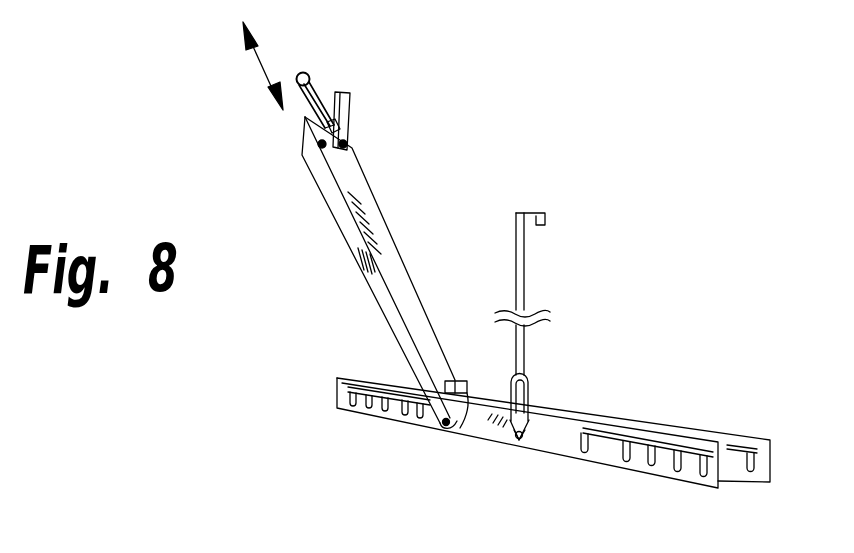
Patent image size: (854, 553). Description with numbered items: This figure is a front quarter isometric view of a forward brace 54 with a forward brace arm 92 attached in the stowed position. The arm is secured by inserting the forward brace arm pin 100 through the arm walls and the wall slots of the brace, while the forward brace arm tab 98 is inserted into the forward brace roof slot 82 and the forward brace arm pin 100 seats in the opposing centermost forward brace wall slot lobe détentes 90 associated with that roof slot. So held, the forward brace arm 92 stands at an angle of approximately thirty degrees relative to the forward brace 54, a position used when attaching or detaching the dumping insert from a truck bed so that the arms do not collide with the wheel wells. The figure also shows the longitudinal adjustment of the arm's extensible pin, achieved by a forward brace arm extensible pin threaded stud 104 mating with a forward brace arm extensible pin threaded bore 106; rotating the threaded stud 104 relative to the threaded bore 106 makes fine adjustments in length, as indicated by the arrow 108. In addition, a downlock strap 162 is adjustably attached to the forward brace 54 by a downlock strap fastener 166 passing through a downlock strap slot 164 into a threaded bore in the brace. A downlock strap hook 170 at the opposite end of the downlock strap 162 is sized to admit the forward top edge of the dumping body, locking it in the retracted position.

The forward brace 54 is at (683, 320).
The forward brace roof slot 82 is at (456, 418).
The forward brace wall slot lobe détentes 90 is at (403, 426).
The forward brace arm 92 is at (506, 109).
The forward brace arm tab 98 is at (458, 381).
The forward brace arm pin 100 is at (435, 428).
The forward brace arm extensible pin threaded stud 104 is at (314, 96).
The forward brace arm extensible pin threaded bore 106 is at (344, 93).
The arrow 108 is at (261, 65).
The downlock strap 162 is at (524, 267).
The downlock strap slot 164 is at (525, 399).
The downlock strap fastener 166 is at (512, 443).
The downlock strap hook 170 is at (545, 223).